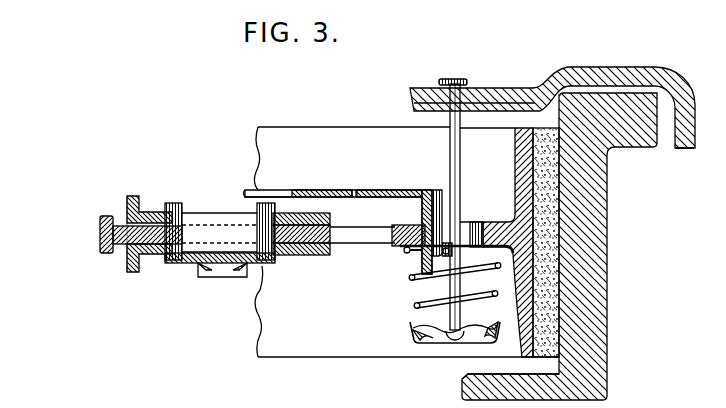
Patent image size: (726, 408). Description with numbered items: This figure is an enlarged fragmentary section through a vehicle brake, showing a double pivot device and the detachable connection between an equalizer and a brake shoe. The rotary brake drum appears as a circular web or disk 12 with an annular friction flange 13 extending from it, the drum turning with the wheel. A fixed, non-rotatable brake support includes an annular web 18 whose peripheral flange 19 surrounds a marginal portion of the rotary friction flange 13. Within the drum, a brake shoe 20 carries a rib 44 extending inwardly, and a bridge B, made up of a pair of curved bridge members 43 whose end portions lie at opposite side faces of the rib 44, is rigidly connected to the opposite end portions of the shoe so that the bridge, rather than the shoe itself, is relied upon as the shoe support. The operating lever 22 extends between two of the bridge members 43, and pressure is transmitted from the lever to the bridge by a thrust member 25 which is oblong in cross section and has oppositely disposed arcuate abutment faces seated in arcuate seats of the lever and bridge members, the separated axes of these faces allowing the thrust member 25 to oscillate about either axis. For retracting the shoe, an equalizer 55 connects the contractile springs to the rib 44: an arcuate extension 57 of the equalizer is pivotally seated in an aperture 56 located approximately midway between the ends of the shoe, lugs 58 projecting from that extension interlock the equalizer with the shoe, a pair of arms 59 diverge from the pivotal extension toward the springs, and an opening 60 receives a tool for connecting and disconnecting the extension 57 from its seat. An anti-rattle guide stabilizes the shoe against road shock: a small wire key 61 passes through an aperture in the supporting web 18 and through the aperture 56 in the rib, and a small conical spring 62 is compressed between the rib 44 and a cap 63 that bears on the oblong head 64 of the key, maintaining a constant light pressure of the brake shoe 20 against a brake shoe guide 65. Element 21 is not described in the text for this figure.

The circular web 12 is at (462, 378).
The annular friction flange 13 is at (606, 268).
The annular web 18 is at (570, 70).
The peripheral flange 19 is at (678, 150).
The brake shoe 20 is at (520, 176).
The packing 21 is at (565, 338).
The operating lever 22 is at (100, 233).
The thrust member 25 is at (220, 240).
The bridge member 43 is at (135, 197).
The rib 44 is at (404, 225).
The equalizer 55 is at (318, 190).
The aperture 56 is at (477, 232).
The arcuate extension 57 is at (432, 190).
The lugs 58 is at (420, 265).
The arms 59 is at (250, 190).
The opening 60 is at (355, 190).
The wire key 61 is at (450, 151).
The conical spring 62 is at (414, 305).
The cap 63 is at (413, 330).
The oblong head 64 is at (449, 338).
The brake shoe guide 65 is at (500, 122).
The bridge B is at (128, 203).